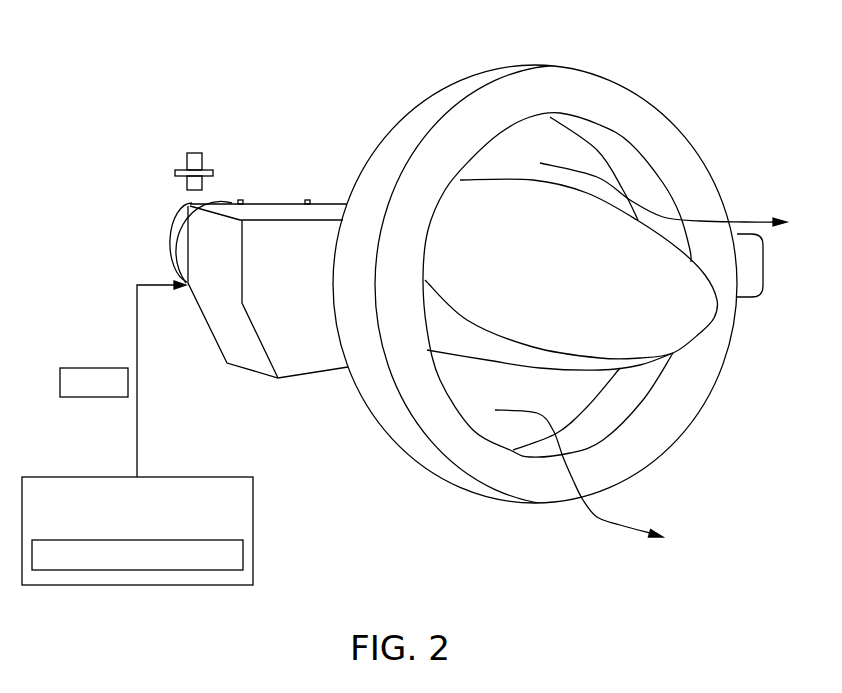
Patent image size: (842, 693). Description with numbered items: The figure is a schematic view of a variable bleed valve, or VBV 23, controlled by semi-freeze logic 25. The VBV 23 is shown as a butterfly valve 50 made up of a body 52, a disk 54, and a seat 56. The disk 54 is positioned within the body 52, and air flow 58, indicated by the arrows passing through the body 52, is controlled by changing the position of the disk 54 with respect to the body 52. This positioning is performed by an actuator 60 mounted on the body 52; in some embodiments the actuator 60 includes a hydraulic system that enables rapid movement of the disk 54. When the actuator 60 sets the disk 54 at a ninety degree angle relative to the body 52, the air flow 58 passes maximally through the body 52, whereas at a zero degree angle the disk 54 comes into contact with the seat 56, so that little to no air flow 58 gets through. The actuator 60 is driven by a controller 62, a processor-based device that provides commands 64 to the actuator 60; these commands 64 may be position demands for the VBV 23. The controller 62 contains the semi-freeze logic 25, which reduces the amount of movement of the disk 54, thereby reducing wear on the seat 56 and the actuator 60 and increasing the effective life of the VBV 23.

The VBV 23 is at (560, 286).
The butterfly valve 50 is at (560, 286).
The body 52 is at (462, 90).
The disk 54 is at (690, 322).
The seat 56 is at (642, 392).
The air flow 58 is at (753, 221).
The actuator 60 is at (264, 202).
The controller 62 is at (165, 531).
The commands 64 is at (92, 367).
The semi-freeze logic 25 is at (243, 555).